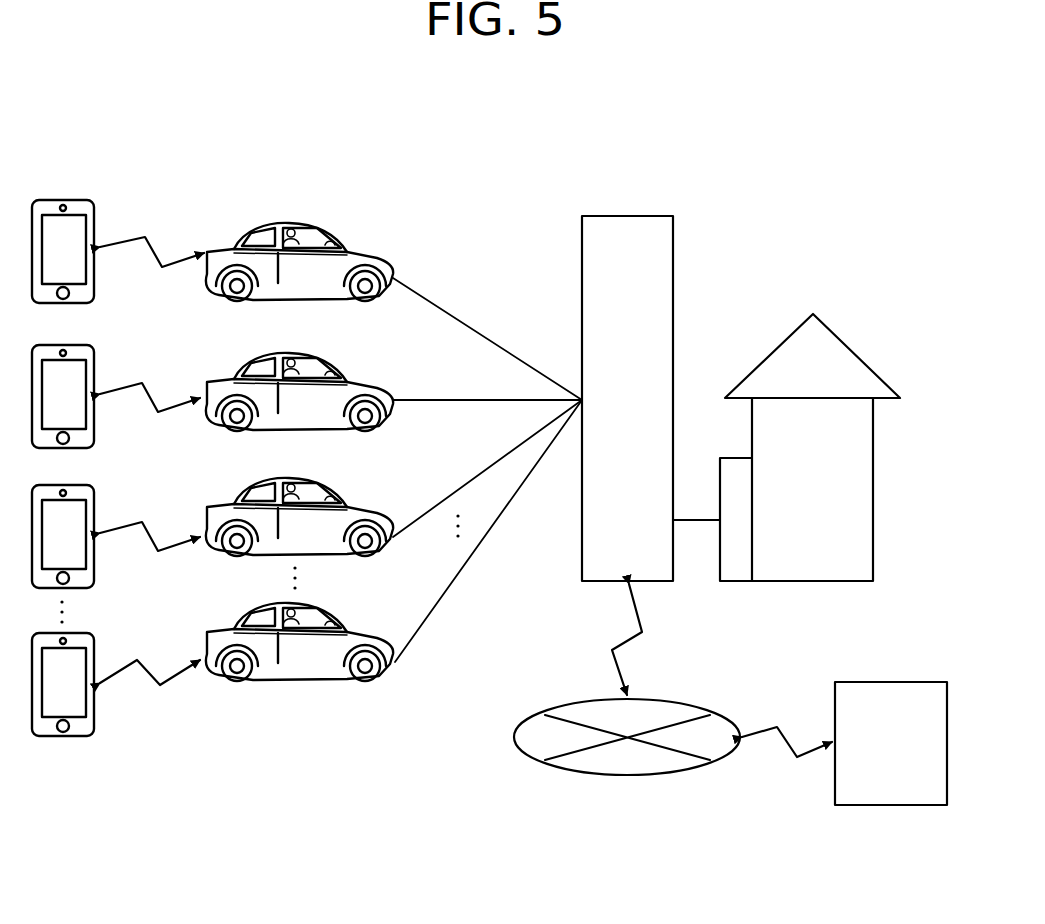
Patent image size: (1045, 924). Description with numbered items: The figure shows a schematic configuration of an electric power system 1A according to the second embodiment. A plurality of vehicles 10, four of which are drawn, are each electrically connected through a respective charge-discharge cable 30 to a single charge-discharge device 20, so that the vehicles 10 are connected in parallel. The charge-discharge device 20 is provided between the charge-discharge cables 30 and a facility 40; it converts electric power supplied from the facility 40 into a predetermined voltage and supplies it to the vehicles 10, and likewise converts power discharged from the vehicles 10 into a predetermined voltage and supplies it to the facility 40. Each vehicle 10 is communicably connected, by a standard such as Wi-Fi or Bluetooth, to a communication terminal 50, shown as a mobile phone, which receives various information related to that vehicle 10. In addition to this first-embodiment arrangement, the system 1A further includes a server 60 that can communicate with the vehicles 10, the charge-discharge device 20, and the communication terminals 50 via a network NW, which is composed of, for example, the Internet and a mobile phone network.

The electric power system 1A is at (862, 171).
The vehicle 10 is at (317, 234).
The charge-discharge device 20 is at (643, 216).
The charge-discharge cable 30 is at (450, 316).
The facility 40 is at (850, 351).
The communication terminal 50 is at (84, 200).
The server 60 is at (890, 682).
The network NW is at (681, 703).